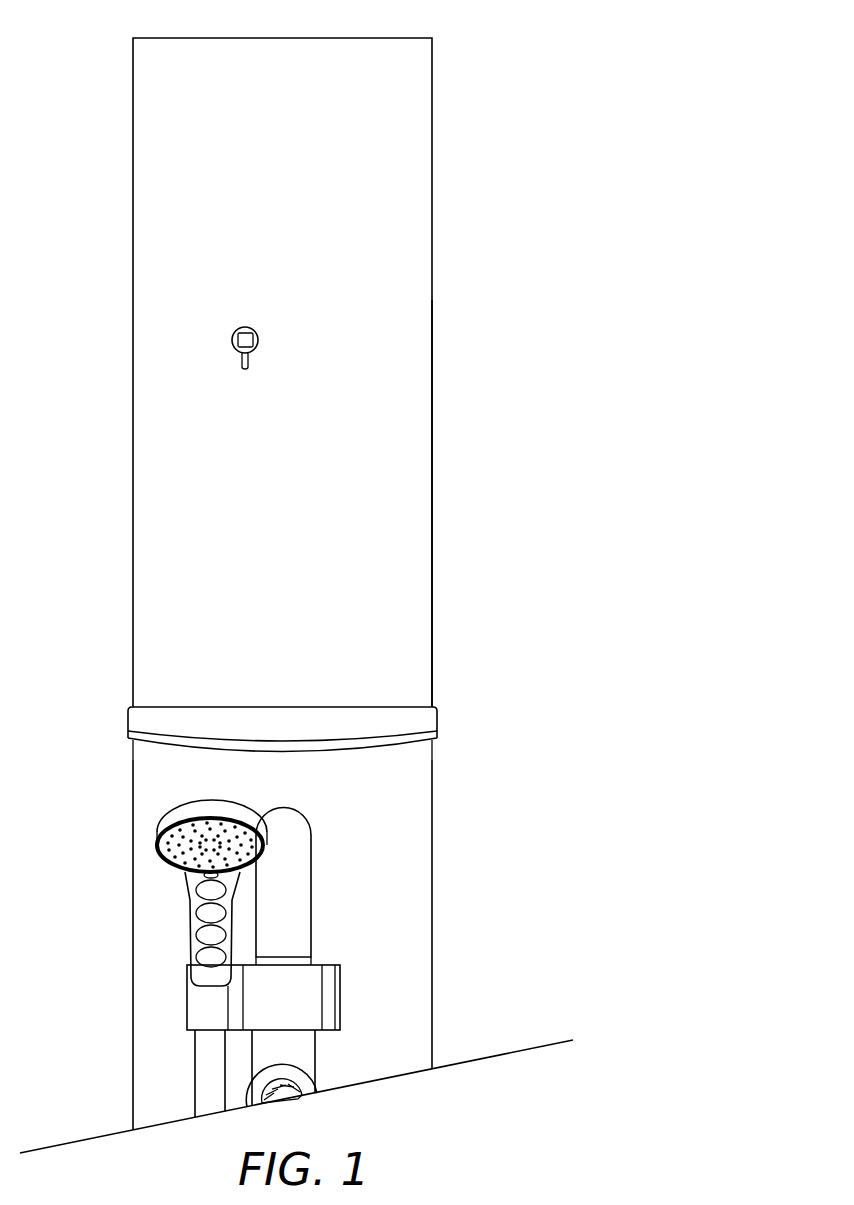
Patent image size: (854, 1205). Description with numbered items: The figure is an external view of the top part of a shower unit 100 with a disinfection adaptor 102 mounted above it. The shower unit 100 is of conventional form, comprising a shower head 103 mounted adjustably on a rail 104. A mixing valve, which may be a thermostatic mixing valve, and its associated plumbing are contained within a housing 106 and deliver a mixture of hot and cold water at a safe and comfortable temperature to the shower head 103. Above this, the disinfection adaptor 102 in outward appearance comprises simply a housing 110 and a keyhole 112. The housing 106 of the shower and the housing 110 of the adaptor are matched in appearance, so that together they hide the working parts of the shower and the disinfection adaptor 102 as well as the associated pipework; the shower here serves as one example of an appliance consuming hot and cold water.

The shower unit 100 is at (449, 800).
The disinfection adaptor 102 is at (449, 52).
The shower head 103 is at (190, 917).
The rail 104 is at (316, 1052).
The housing 106 is at (133, 983).
The housing 110 is at (433, 503).
The keyhole 112 is at (258, 340).